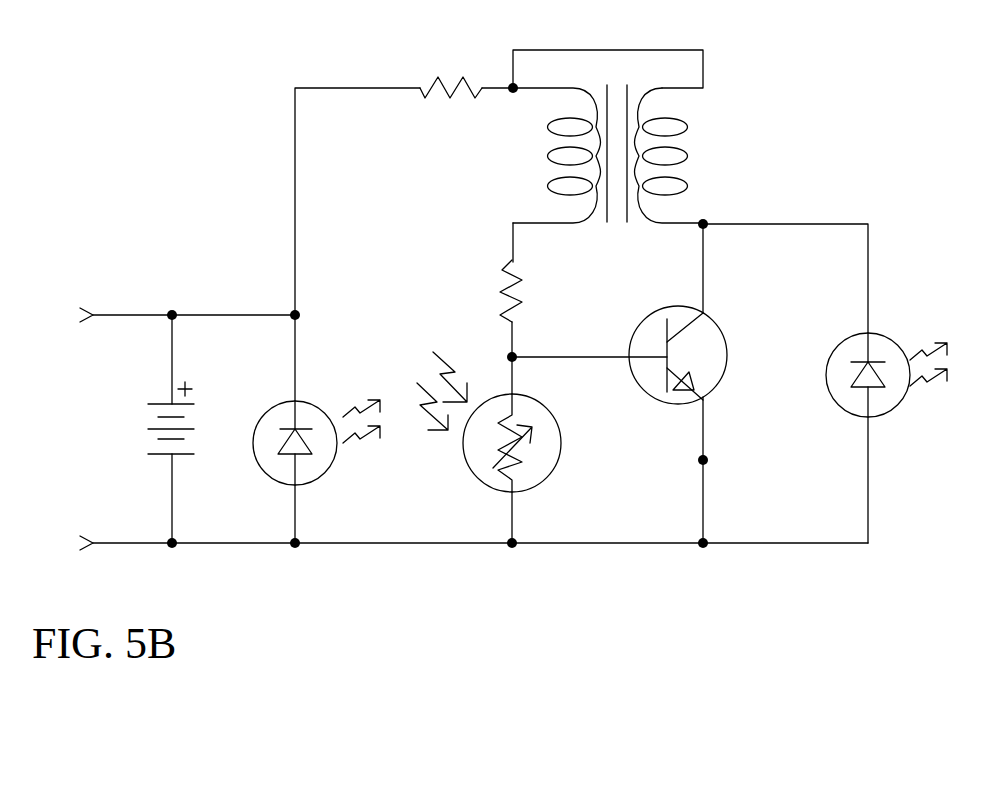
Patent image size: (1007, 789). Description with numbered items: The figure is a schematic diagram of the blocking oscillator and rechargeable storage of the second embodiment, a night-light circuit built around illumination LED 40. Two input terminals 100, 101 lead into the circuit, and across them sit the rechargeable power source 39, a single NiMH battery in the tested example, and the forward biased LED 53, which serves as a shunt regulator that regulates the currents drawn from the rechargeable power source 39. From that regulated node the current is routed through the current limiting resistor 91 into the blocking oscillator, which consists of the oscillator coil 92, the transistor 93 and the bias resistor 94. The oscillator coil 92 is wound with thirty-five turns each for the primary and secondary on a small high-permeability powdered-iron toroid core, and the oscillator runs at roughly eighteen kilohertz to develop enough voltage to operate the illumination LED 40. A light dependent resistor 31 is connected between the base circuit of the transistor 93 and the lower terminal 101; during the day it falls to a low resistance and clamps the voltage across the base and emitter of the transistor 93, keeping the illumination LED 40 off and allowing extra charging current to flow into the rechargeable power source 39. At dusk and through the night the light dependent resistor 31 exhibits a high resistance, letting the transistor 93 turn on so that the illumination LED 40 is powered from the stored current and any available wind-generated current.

The first terminal 100 is at (167, 316).
The second terminal 101 is at (454, 544).
The rechargeable power source 39 is at (157, 424).
The forward biased LED 53 is at (315, 402).
The light dependent resistor 31 is at (497, 398).
The bias resistor 94 is at (523, 293).
The current limiting resistor 91 is at (447, 76).
The oscillator coil 92 is at (700, 148).
The transistor 93 is at (725, 333).
The illumination LED 40 is at (889, 338).